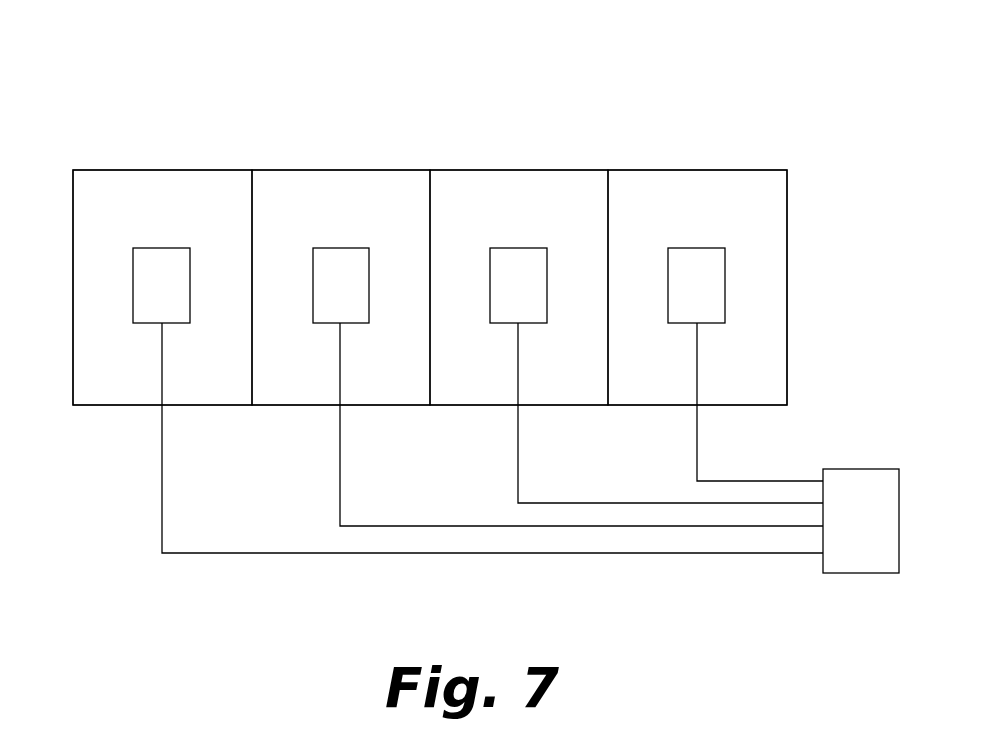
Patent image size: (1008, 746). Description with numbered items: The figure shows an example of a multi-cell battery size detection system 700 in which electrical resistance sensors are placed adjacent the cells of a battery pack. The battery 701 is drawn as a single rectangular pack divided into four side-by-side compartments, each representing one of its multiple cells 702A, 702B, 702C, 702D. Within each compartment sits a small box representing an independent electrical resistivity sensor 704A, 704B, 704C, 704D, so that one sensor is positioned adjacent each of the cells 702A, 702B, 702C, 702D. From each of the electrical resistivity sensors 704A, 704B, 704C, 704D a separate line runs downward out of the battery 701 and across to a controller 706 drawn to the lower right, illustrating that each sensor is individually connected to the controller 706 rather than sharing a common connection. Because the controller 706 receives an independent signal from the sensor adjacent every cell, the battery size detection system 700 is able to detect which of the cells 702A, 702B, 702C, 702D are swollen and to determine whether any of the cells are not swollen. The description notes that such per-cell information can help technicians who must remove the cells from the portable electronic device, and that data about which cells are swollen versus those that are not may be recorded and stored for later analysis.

The multi-cell battery size detection system 700 is at (103, 68).
The battery 701 is at (243, 158).
The cell 702A is at (190, 222).
The cell 702B is at (364, 222).
The cell 702C is at (542, 222).
The cell 702D is at (724, 222).
The electrical resistivity sensor 704A is at (133, 316).
The electrical resistivity sensor 704B is at (313, 316).
The electrical resistivity sensor 704C is at (490, 316).
The electrical resistivity sensor 704D is at (668, 316).
The controller 706 is at (880, 477).